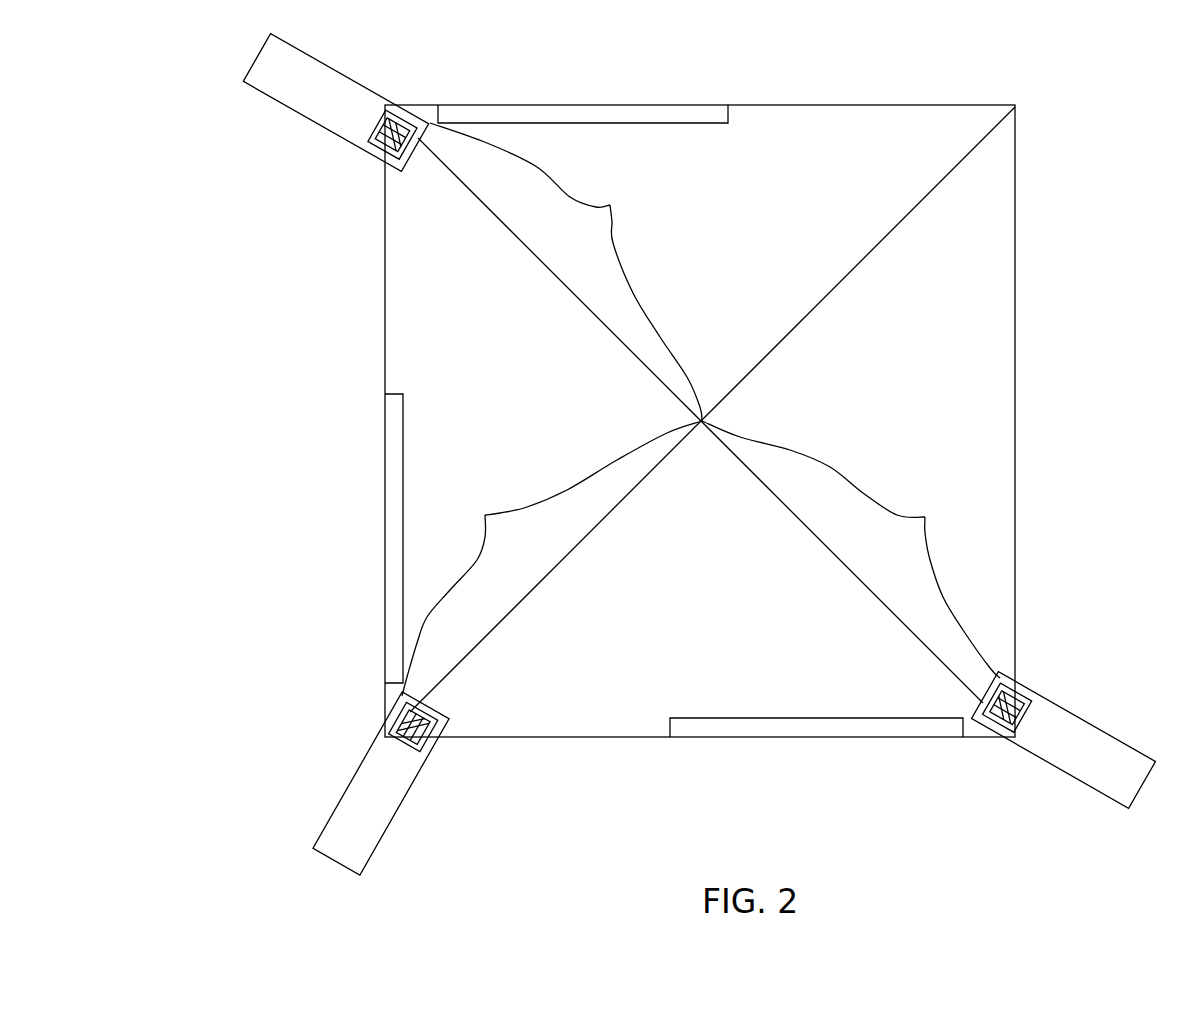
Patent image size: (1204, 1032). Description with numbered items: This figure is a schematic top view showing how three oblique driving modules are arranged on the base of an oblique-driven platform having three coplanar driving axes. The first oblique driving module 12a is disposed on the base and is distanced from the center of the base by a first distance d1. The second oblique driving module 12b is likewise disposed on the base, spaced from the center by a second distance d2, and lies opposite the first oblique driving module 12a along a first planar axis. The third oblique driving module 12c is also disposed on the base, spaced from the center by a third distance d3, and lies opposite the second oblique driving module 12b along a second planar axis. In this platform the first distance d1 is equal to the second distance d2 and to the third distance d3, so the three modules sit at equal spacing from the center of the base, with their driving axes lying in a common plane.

The first oblique driving module 12a is at (290, 67).
The second oblique driving module 12b is at (373, 820).
The third oblique driving module 12c is at (1123, 763).
The first distance d1 is at (566, 272).
The second distance d2 is at (552, 558).
The third distance d3 is at (851, 549).